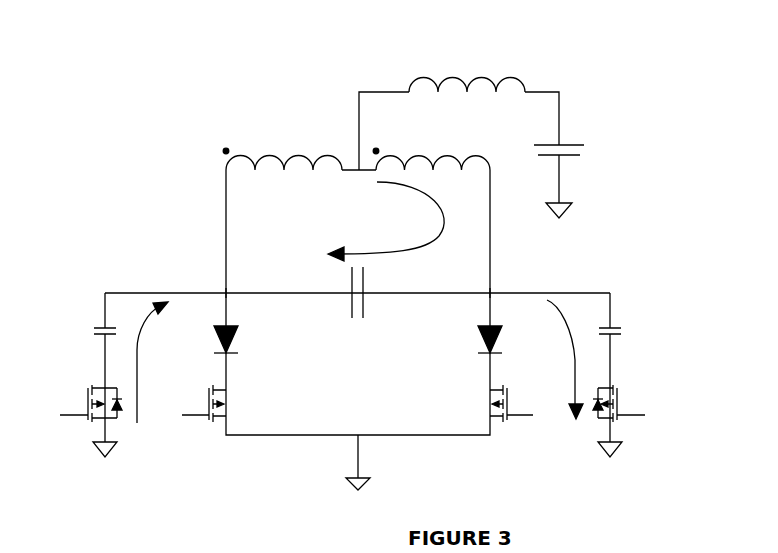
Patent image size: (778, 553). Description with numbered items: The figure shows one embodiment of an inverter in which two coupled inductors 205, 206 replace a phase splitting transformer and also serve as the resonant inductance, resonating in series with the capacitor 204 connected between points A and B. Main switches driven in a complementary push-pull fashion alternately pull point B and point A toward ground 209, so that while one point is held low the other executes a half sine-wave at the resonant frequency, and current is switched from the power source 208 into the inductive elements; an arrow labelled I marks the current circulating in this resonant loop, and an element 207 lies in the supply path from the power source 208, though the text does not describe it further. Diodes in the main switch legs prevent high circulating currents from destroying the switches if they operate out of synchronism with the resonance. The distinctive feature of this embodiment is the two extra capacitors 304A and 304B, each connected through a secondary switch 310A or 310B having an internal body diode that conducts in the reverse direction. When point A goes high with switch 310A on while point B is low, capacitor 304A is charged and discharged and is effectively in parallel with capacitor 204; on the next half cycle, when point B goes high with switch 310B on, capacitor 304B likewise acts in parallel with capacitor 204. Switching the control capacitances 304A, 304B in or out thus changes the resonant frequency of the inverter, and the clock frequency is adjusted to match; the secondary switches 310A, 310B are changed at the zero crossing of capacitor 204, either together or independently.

The capacitor 204 is at (355, 306).
The coupled inductor 205 is at (282, 144).
The coupled inductor 206 is at (431, 144).
The inductor 207 is at (467, 66).
The power source 208 is at (583, 150).
The ground 209 is at (357, 343).
The capacitor 304A is at (640, 333).
The capacitor 304B is at (74, 333).
The switch 310A is at (618, 424).
The switch 310B is at (97, 423).
The point A is at (495, 287).
The point B is at (222, 288).
The current I is at (386, 221).